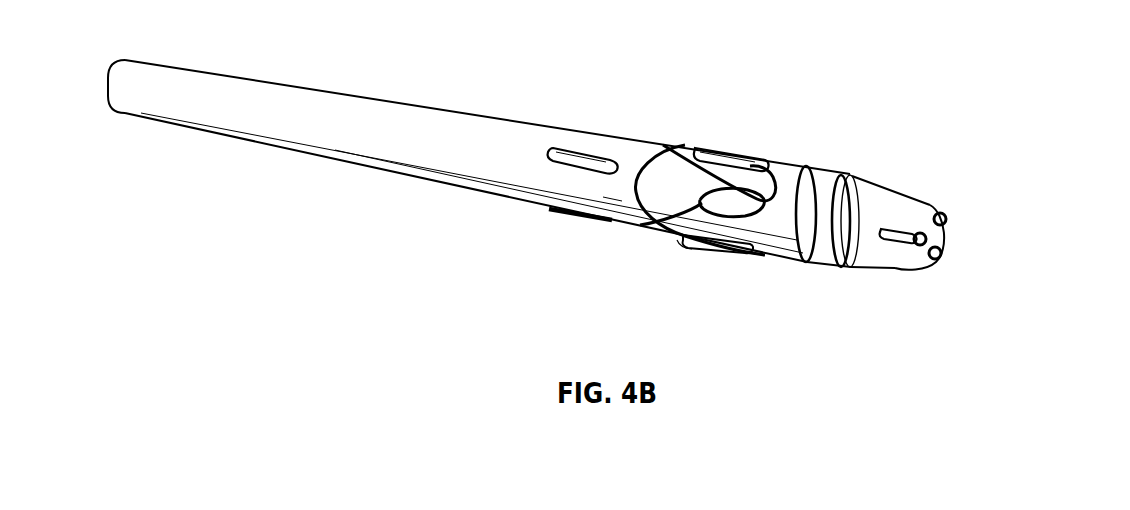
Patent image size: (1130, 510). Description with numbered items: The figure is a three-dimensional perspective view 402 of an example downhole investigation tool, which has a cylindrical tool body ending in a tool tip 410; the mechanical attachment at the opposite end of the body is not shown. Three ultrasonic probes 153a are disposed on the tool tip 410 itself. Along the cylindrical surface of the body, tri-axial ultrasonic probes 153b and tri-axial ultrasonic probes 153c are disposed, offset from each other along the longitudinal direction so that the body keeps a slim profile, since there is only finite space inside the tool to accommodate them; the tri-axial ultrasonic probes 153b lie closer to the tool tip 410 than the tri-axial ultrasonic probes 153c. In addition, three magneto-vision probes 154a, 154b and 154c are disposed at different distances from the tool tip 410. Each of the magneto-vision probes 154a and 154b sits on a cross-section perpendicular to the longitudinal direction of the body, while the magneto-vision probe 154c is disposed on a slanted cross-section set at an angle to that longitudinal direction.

The 3D perspective view 402 is at (1015, 201).
The tool tip 410 is at (903, 183).
The ultrasonic probes 153a is at (941, 262).
The tri-axial ultrasonic probes 153b is at (687, 236).
The tri-axial ultrasonic probes 153c is at (550, 160).
The magneto-vision probes 154a is at (873, 208).
The magneto-vision probes 154b is at (808, 165).
The magneto-vision probes 154c is at (636, 172).